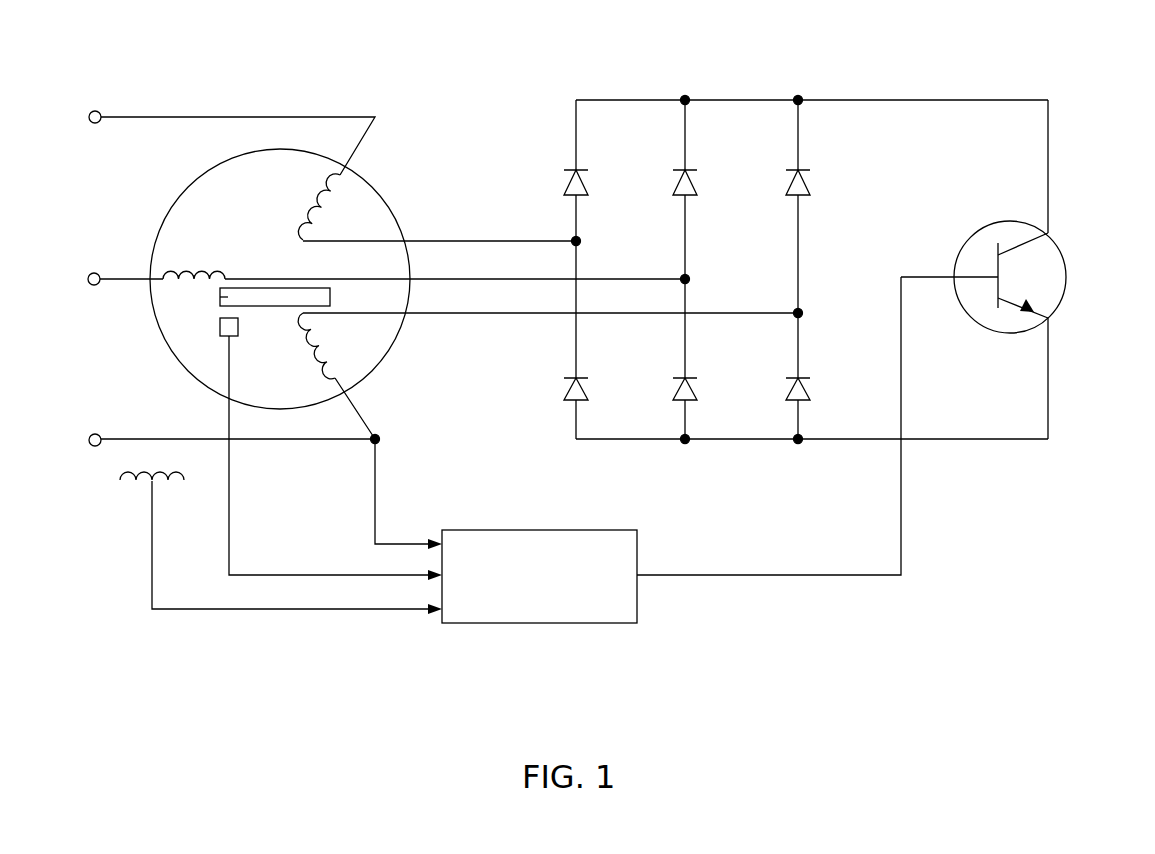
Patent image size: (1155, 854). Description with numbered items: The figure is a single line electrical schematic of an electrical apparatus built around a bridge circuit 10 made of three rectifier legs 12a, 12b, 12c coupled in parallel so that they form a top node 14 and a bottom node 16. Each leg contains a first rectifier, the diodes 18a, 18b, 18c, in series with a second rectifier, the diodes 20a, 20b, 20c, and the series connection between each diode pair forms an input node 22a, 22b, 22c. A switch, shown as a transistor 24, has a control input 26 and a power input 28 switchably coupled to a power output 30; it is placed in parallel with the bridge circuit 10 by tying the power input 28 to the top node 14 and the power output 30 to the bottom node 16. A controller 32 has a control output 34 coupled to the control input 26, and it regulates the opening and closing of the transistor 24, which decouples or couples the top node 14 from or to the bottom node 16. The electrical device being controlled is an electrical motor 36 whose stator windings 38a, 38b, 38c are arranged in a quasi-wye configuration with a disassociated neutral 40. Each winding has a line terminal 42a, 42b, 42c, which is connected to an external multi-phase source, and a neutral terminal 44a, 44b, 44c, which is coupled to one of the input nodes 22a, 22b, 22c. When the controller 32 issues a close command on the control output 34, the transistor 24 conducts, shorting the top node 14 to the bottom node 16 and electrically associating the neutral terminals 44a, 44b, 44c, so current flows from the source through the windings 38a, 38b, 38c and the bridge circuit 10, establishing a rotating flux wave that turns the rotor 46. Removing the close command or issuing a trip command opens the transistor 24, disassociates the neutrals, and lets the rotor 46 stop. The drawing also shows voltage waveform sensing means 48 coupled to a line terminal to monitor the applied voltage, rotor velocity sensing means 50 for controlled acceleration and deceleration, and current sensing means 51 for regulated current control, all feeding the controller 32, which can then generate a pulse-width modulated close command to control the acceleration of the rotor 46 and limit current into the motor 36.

The bridge circuit 10 is at (703, 52).
The rectifier leg 12a is at (533, 198).
The rectifier leg 12b is at (730, 237).
The rectifier leg 12c is at (846, 244).
The top node 14 is at (937, 100).
The bottom node 16 is at (935, 440).
The diode 18a is at (578, 172).
The diode 18b is at (688, 172).
The diode 18c is at (805, 172).
The diode 20a is at (574, 378).
The diode 20b is at (687, 378).
The diode 20c is at (803, 377).
The input node 22a is at (582, 244).
The input node 22b is at (690, 278).
The input node 22c is at (801, 315).
The transistor 24 is at (1092, 280).
The control input 26 is at (955, 278).
The power input 28 is at (1048, 233).
The power output 30 is at (1048, 318).
The controller 32 is at (552, 623).
The control output 34 is at (638, 577).
The electrical motor 36 is at (163, 170).
The stator winding 38a is at (330, 195).
The stator winding 38b is at (184, 275).
The stator winding 38c is at (322, 367).
The disassociated neutral 40 is at (282, 264).
The line terminal 42a is at (378, 132).
The line terminal 42b is at (130, 275).
The line terminal 42c is at (381, 413).
The neutral terminal 44a is at (492, 240).
The neutral terminal 44b is at (548, 281).
The neutral terminal 44c is at (448, 315).
The rotor 46 is at (220, 296).
The voltage waveform sensing means 48 is at (375, 500).
The rotor velocity sensing means 50 is at (218, 328).
The current sensing means 51 is at (142, 484).